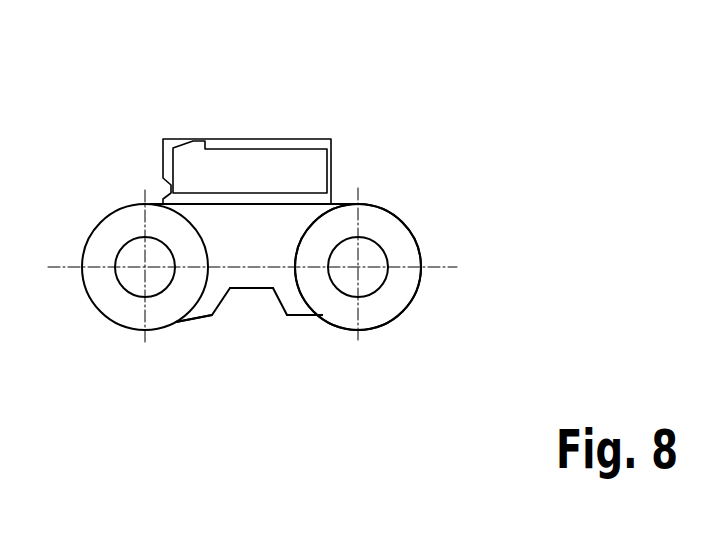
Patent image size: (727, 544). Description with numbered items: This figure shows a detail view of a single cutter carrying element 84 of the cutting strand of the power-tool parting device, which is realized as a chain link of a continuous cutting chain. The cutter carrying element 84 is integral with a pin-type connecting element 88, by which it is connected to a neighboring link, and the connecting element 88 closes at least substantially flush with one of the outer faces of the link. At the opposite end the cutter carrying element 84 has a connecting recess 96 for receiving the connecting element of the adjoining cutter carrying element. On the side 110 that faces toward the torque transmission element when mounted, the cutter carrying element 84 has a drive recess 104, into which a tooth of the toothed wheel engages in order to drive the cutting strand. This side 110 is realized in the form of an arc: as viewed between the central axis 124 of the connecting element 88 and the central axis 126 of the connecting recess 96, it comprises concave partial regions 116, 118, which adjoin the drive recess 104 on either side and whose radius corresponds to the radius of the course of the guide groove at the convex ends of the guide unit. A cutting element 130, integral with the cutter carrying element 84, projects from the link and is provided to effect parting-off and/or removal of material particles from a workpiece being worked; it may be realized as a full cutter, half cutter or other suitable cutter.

The cutter carrying element 84 is at (379, 207).
The connecting element 88 is at (157, 278).
The connecting recess 96 is at (384, 246).
The drive recess 104 is at (281, 301).
The side 110 is at (250, 334).
The partial region 116 is at (197, 334).
The partial region 118 is at (318, 333).
The central axis 124 is at (143, 267).
The central axis 126 is at (423, 296).
The cutting element 130 is at (285, 147).